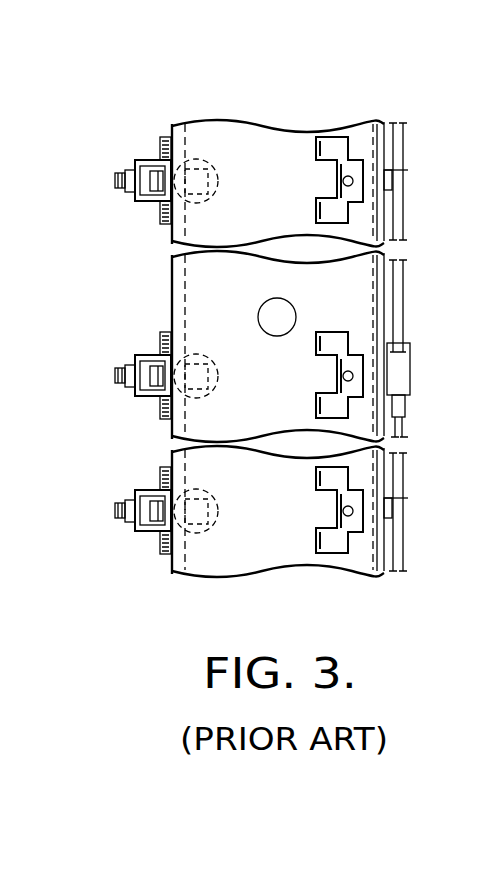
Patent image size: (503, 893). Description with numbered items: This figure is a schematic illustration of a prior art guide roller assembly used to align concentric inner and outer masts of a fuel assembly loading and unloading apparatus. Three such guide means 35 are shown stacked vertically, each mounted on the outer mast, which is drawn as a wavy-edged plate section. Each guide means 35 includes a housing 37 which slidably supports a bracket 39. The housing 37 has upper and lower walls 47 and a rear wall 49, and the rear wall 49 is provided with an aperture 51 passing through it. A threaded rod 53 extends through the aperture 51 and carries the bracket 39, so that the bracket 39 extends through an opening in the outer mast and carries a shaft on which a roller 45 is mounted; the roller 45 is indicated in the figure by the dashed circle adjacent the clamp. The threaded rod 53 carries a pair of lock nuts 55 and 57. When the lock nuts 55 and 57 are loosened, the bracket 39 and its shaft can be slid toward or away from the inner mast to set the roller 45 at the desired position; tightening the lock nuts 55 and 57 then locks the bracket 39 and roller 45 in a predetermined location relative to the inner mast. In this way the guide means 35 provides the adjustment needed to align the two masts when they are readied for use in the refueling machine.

The guide means 35 is at (223, 179).
The housing 37 is at (233, 351).
The bracket 39 is at (160, 213).
The roller 45 is at (208, 353).
The upper and lower walls 47 is at (155, 159).
The rear wall 49 is at (135, 200).
The aperture 51 is at (121, 356).
The threaded rod 53 is at (160, 362).
The lock nut 55 is at (128, 502).
The lock nut 57 is at (146, 532).